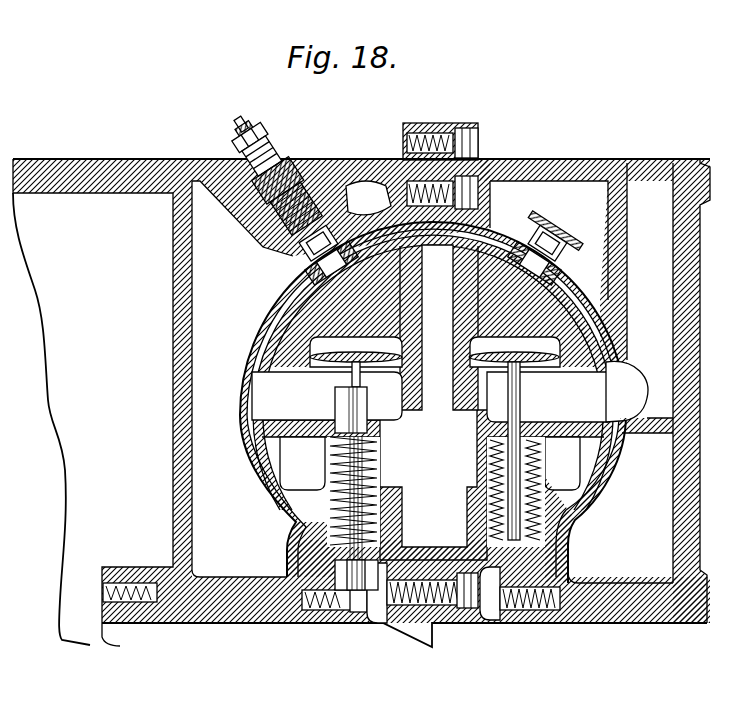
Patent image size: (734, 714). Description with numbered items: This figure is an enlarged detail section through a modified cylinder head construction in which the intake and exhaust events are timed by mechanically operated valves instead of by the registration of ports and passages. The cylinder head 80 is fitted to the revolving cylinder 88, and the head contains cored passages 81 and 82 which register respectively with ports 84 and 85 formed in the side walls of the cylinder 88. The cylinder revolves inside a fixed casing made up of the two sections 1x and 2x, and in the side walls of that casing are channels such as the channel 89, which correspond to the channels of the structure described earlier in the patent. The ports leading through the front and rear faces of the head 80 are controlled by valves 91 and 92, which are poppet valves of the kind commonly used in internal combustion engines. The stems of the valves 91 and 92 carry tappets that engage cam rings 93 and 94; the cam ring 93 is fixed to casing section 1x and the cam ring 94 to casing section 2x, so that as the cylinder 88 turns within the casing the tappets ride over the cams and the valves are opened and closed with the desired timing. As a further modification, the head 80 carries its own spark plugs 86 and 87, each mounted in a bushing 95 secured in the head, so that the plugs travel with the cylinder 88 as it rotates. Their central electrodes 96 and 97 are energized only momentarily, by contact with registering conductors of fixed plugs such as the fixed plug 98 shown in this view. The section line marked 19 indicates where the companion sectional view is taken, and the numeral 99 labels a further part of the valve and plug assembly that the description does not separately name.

The casing section 1x is at (135, 173).
The casing section 2x is at (615, 172).
The section line 19- 19 is at (400, 102).
The cylinder head 80 is at (587, 497).
The cored passage 81 is at (255, 398).
The cored passage 82 is at (577, 387).
The port 84 is at (293, 407).
The port 85 is at (640, 407).
The spark plug 86 is at (310, 278).
The spark plug 87 is at (560, 264).
The cylinder 88 is at (608, 466).
The channel 89 is at (630, 387).
The valve 91 is at (337, 353).
The valve 92 is at (577, 347).
The cam ring 93 is at (337, 567).
The cam ring 94 is at (523, 574).
The bushing 95 is at (366, 222).
The central electrode 96 is at (297, 258).
The central electrode 97 is at (550, 250).
The fixed plug 98 is at (312, 180).
The gasket 99 is at (527, 240).